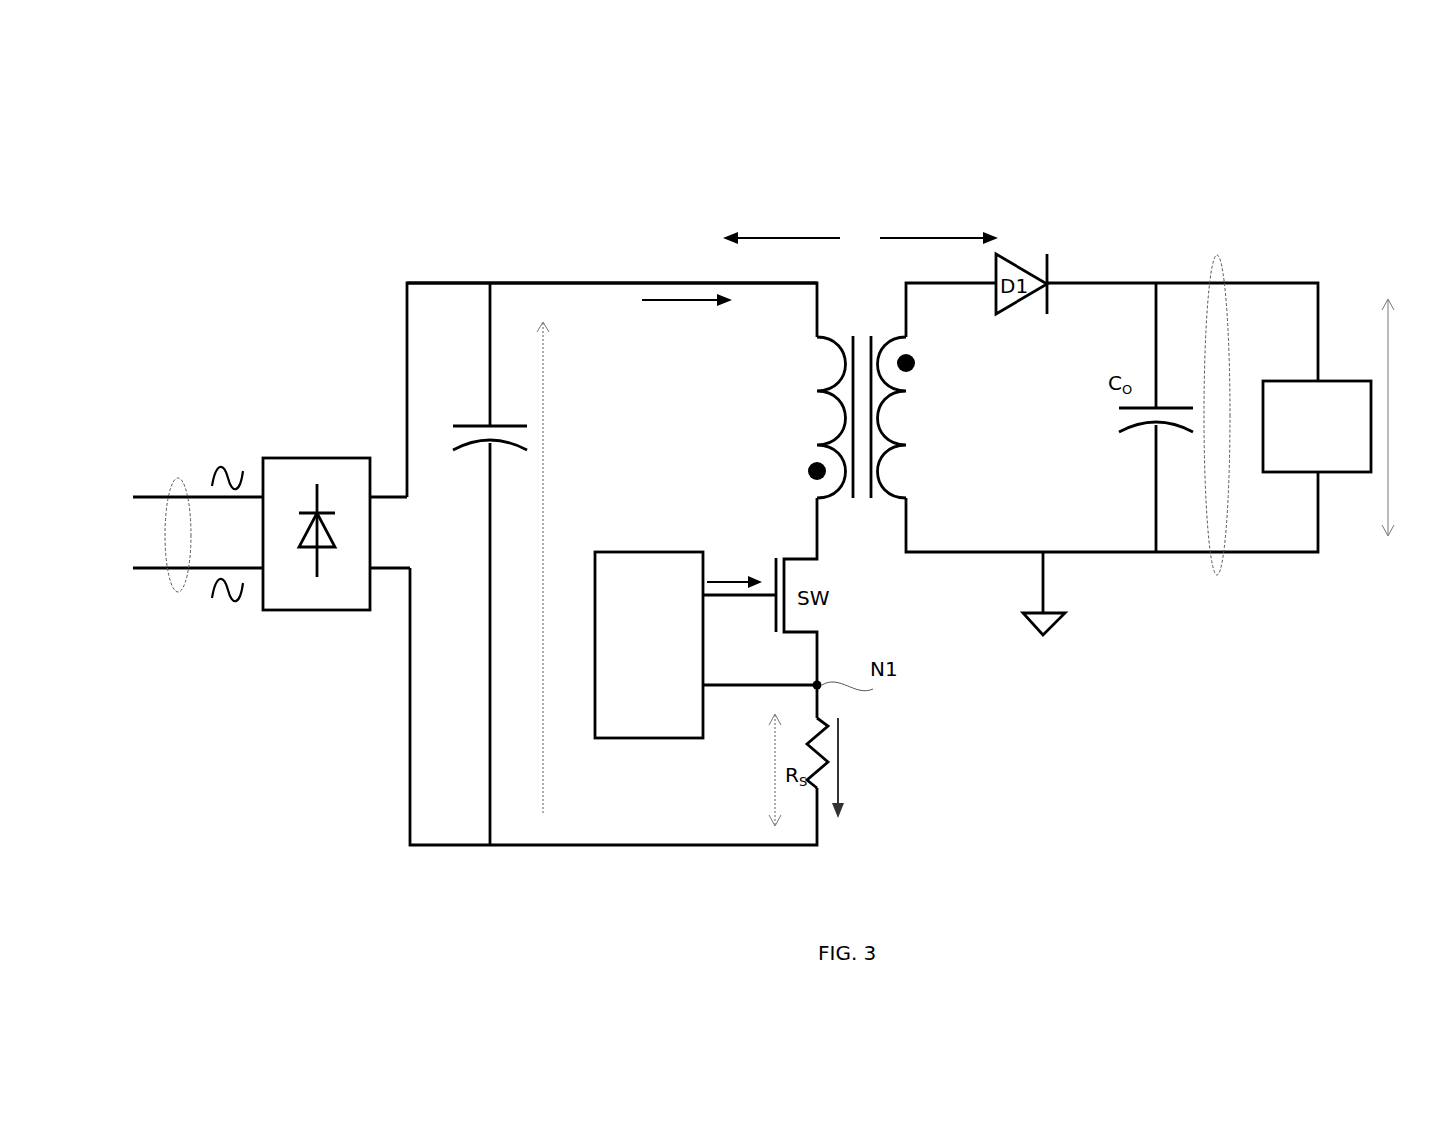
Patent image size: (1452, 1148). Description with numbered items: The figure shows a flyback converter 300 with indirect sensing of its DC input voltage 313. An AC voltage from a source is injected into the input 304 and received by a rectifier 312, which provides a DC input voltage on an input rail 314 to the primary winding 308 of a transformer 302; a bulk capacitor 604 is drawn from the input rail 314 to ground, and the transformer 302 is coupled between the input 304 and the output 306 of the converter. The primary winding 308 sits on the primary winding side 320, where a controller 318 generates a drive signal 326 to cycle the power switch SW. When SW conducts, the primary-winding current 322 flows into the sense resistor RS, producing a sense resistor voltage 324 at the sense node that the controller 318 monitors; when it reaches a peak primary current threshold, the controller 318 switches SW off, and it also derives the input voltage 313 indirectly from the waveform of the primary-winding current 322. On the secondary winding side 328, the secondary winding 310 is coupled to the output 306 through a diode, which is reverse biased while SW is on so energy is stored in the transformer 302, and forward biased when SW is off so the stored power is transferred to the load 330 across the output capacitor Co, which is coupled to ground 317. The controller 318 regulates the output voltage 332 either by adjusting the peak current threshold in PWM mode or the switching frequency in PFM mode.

The flyback converter 300 is at (1180, 83).
The transformer 302 is at (837, 505).
The input 304 is at (178, 592).
The output 306 is at (1218, 575).
The primary winding 308 is at (817, 394).
The secondary winding 310 is at (905, 442).
The rectifier 312 is at (313, 458).
The input voltage 313 is at (545, 490).
The input rail 314 is at (523, 282).
The ground 317 is at (1045, 593).
The controller 318 is at (706, 645).
The primary winding side 320 is at (803, 236).
The primary-winding current 322 is at (685, 302).
The sense resistor voltage 324 is at (770, 790).
The drive signal 326 is at (728, 578).
The secondary winding side 328 is at (932, 235).
The load 330 is at (1317, 426).
The output voltage 332 is at (1411, 416).
The input capacitor 604 is at (483, 564).